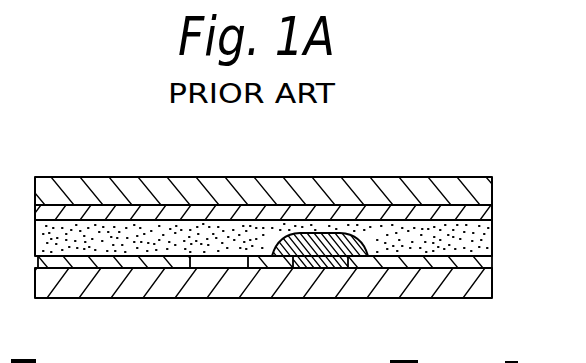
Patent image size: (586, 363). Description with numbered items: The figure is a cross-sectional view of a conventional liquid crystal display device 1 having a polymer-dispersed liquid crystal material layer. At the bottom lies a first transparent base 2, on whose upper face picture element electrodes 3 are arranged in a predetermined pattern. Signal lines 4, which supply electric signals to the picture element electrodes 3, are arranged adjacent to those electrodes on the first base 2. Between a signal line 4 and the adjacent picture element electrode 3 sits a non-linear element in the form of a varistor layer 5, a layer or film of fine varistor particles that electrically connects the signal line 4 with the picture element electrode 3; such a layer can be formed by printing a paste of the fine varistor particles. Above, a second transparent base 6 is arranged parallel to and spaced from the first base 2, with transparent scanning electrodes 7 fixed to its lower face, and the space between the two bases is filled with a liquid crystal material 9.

The liquid crystal display device 1 is at (352, 131).
The first transparent base 2 is at (100, 281).
The picture element electrode 3 is at (164, 263).
The signal line 4 is at (263, 258).
The varistor layer 5 is at (322, 252).
The second transparent base 6 is at (142, 183).
The transparent scanning electrode 7 is at (234, 210).
The liquid crystal material 9 is at (363, 230).